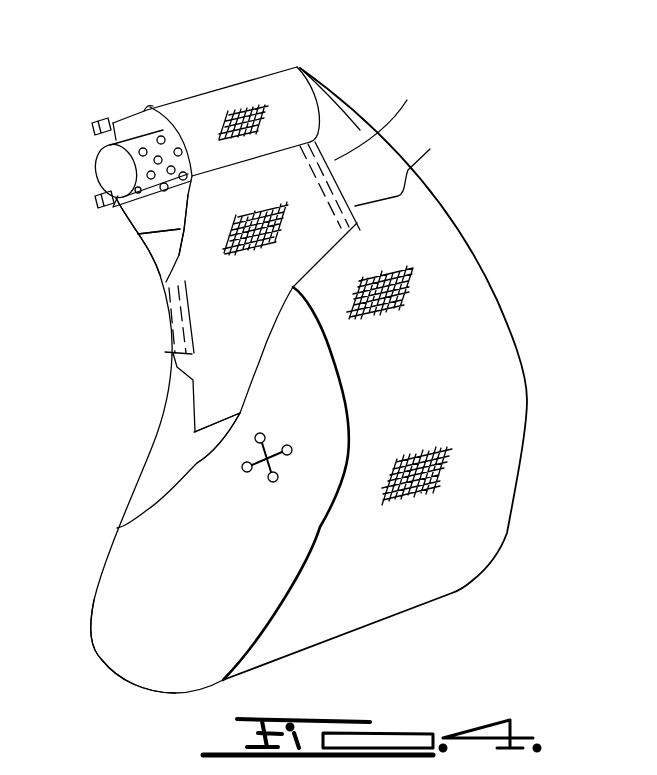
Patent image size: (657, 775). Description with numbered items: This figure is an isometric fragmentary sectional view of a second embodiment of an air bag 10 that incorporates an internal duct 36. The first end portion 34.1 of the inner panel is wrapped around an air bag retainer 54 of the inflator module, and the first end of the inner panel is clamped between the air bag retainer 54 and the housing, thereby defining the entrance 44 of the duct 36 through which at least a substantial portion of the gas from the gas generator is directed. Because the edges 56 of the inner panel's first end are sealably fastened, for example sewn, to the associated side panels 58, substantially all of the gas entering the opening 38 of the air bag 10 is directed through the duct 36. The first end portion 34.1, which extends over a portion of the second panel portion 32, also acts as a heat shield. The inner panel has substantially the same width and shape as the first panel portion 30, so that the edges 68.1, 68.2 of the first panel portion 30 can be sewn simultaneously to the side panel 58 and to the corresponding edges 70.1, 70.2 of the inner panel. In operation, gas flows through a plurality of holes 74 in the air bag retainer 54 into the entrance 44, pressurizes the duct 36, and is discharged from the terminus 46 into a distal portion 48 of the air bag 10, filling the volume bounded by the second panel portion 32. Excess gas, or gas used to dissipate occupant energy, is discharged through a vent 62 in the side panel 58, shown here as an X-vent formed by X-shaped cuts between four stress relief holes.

The air bag 10 is at (527, 377).
The first panel portion 30 is at (167, 353).
The second panel portion 32 is at (493, 279).
The first end portion 34.1 is at (234, 70).
The duct 36 is at (178, 410).
The opening 38 is at (134, 108).
The entrance 44 is at (170, 205).
The terminus 46 is at (198, 450).
The distal portion 48 is at (124, 691).
The air bag retainer 54 is at (110, 128).
The edges 56 is at (322, 110).
The side panels 58 is at (380, 178).
The vent 62 is at (259, 478).
The edge of the first panel portion 68.1 is at (167, 333).
The edge of the first panel portion 68.2 is at (408, 170).
The edge of the inner panel 70.1 is at (162, 292).
The edge of the inner panel 70.2 is at (335, 160).
The holes 74 is at (160, 143).